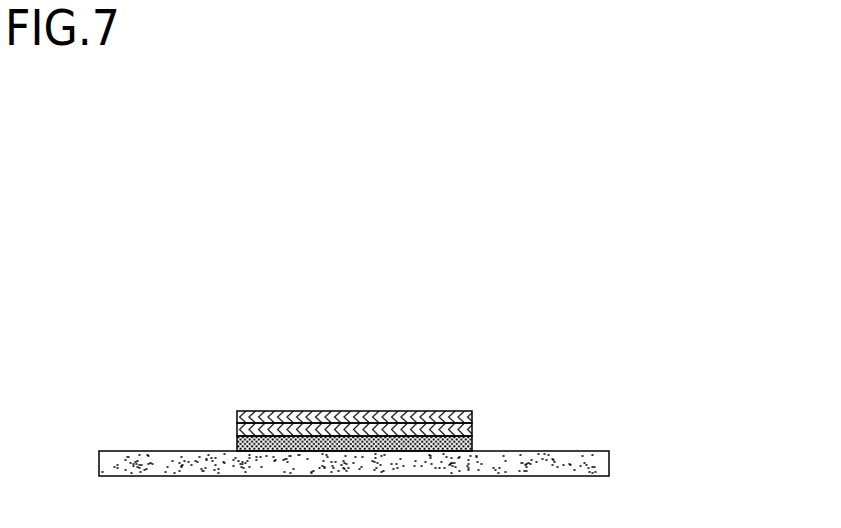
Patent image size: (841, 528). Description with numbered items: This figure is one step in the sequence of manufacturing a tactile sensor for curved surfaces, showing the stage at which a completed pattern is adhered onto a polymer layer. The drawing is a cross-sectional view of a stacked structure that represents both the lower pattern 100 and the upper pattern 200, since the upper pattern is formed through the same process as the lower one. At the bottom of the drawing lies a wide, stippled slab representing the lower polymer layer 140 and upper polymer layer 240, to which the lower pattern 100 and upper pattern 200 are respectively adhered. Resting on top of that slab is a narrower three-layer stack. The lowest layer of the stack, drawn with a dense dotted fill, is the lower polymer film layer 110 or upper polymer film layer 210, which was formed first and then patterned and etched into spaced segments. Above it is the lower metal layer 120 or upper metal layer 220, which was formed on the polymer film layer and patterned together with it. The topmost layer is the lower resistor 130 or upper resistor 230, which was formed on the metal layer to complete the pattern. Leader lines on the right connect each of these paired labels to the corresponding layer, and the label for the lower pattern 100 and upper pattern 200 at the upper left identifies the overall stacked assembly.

The lower pattern 100 is at (396, 355).
The upper pattern 200 is at (150, 266).
The lower polymer film layer 110 is at (422, 434).
The upper polymer film layer 210 is at (463, 442).
The lower metal layer 120 is at (422, 413).
The upper metal layer 220 is at (463, 428).
The lower resistor 130 is at (422, 392).
The upper resistor 230 is at (462, 417).
The lower polymer layer 140 is at (419, 464).
The upper polymer layer 240 is at (595, 463).